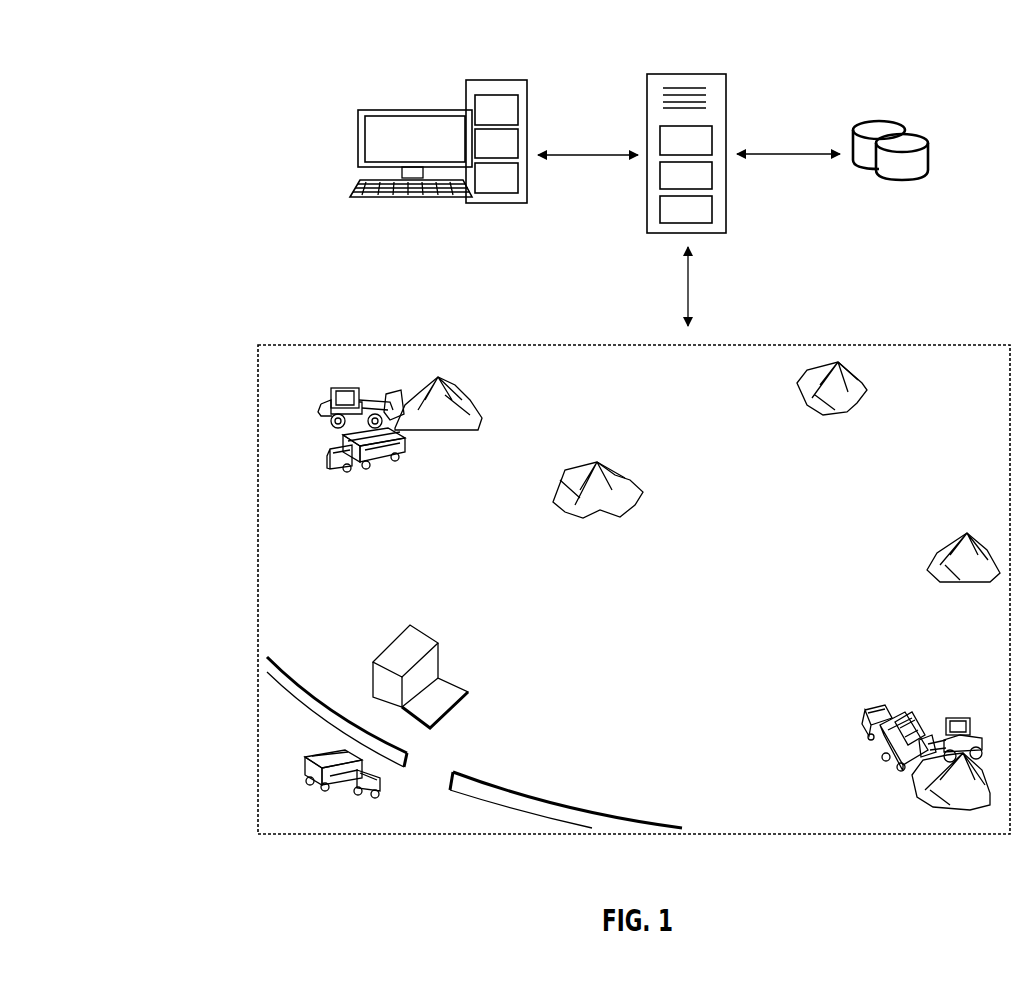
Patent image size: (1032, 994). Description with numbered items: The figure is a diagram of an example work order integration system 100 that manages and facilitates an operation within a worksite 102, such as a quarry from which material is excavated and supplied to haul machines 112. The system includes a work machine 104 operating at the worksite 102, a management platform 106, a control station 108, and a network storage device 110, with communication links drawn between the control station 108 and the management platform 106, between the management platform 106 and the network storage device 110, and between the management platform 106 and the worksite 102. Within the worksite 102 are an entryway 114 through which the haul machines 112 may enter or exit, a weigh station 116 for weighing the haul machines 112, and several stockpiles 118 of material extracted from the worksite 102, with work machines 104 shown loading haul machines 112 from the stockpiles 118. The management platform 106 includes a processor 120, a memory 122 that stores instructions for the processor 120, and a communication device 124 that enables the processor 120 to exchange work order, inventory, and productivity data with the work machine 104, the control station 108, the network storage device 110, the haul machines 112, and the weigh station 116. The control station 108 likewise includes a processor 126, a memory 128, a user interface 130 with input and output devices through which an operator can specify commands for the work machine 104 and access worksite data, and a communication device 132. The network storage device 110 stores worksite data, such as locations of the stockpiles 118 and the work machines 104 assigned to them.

The work order integration system 100 is at (118, 62).
The worksite 102 is at (265, 343).
The work machine 104 is at (355, 390).
The management platform 106 is at (697, 74).
The control station 108 is at (498, 80).
The network storage device 110 is at (882, 119).
The haul machine 112 is at (408, 442).
The entryway 114 is at (437, 772).
The weigh station 116 is at (390, 645).
The stockpile 118 is at (973, 802).
The processor 120 is at (701, 152).
The memory 122 is at (701, 187).
The communication device 124 is at (701, 221).
The processor 126 is at (512, 121).
The memory 128 is at (512, 155).
The user interface 130 is at (346, 118).
The communication device 132 is at (512, 189).